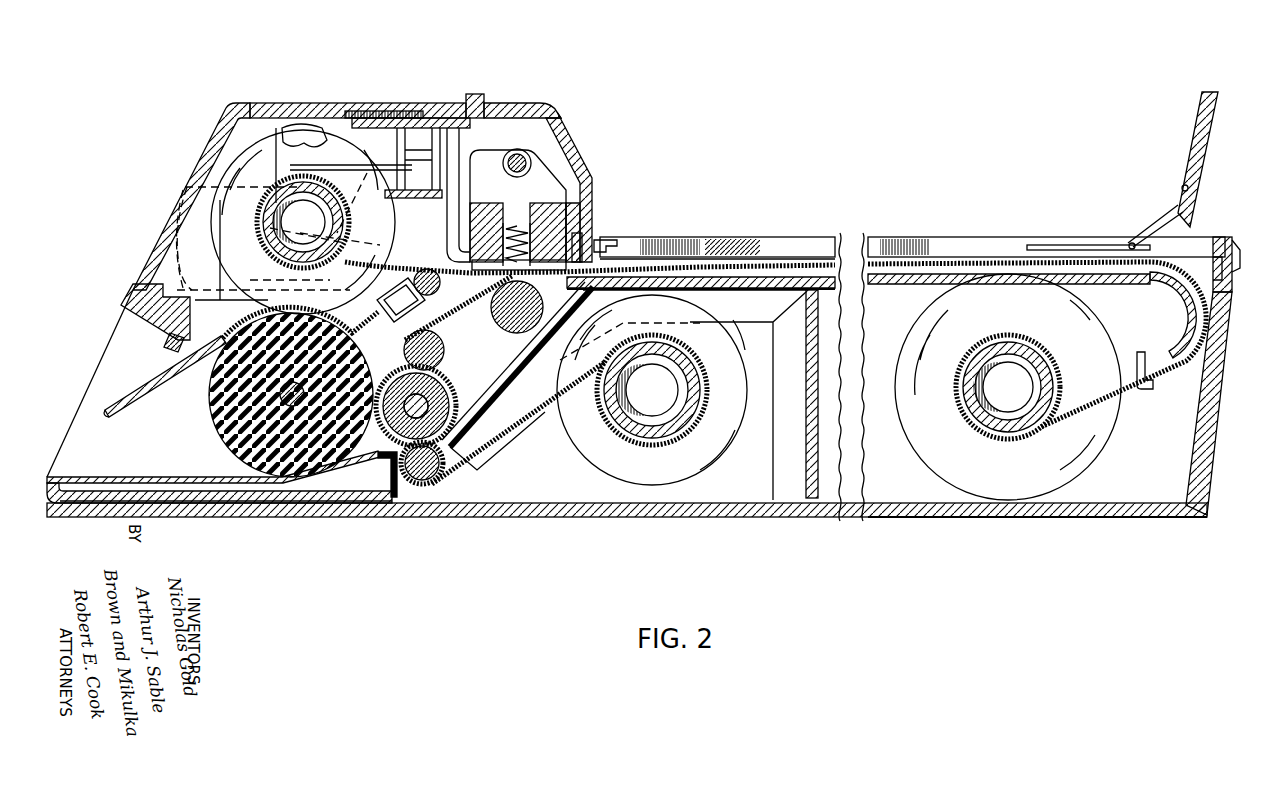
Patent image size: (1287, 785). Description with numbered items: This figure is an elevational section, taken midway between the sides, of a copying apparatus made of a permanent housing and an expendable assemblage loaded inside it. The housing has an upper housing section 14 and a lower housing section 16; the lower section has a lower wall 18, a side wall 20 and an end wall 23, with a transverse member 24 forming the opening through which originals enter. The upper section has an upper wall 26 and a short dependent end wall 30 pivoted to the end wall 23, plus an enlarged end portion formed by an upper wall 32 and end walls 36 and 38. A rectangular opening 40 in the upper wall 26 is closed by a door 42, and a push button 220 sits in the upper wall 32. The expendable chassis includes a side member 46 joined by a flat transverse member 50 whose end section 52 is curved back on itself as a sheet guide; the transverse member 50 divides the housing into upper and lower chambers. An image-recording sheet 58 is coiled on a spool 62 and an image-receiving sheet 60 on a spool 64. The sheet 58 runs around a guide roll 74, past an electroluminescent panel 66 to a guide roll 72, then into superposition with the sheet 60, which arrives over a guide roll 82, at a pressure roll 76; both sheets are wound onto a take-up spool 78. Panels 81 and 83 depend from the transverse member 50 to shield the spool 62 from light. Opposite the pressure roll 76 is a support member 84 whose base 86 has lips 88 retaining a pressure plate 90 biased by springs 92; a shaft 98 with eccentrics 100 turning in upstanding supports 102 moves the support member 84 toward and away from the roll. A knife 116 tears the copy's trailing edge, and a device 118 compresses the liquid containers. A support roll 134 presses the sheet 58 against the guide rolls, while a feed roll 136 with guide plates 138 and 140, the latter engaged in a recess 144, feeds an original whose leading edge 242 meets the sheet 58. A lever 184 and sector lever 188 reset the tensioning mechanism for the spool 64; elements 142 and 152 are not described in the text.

The upper housing section 14 is at (383, 175).
The lower housing section 16 is at (1068, 519).
The lower wall 18 is at (597, 513).
The side wall 20 is at (118, 456).
The end wall 23 is at (1210, 411).
The transverse member 24 is at (131, 304).
The upper wall 26 is at (602, 244).
The dependent end wall 30 is at (1232, 252).
The upper wall 32 is at (283, 110).
The end wall 36 is at (173, 192).
The end wall 38 is at (588, 168).
The rectangular opening 40 is at (797, 247).
The door 42 is at (1190, 124).
The side member 46 is at (877, 486).
The transverse member 50 is at (943, 262).
The end section 52 is at (1200, 321).
The image-recording sheet 58 is at (557, 407).
The image-receiving sheet 60 is at (397, 273).
The spool 62 is at (684, 396).
The spool 64 is at (290, 158).
The electroluminescent panel 66 is at (433, 396).
The guide roll 72 is at (443, 343).
The guide roll 74 is at (433, 488).
The pressure roll 76 is at (528, 326).
The spool 78 is at (961, 407).
The panel 81 is at (520, 428).
The guide roll 82 is at (440, 283).
The panel 83 is at (838, 465).
The support member 84 is at (568, 224).
The base 86 is at (493, 222).
The lips 88 is at (536, 306).
The pressure plate 90 is at (584, 240).
The springs 92 is at (536, 228).
The shaft 98 is at (517, 157).
The eccentrics 100 is at (526, 183).
The upstanding supports 102 is at (480, 157).
The knife 116 is at (621, 258).
The device 118 is at (388, 310).
The support roll 134 is at (432, 382).
The feed roll 136 is at (218, 433).
The guide plate 138 is at (236, 503).
The guide plate 140 is at (248, 324).
The guide plate 142 is at (188, 357).
The recess 144 is at (170, 344).
The guide end 152 is at (106, 420).
The lever 184 is at (178, 244).
The lever 188 is at (326, 128).
The push button 220 is at (474, 94).
The leading edge 242 is at (138, 492).